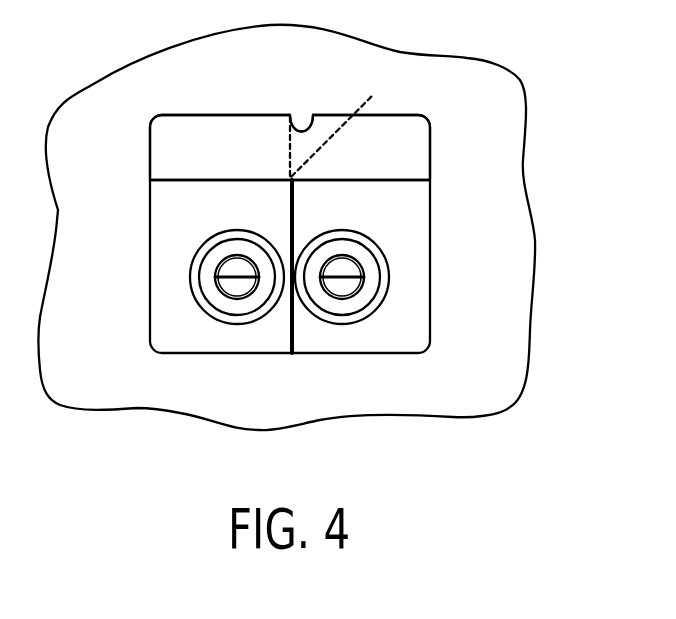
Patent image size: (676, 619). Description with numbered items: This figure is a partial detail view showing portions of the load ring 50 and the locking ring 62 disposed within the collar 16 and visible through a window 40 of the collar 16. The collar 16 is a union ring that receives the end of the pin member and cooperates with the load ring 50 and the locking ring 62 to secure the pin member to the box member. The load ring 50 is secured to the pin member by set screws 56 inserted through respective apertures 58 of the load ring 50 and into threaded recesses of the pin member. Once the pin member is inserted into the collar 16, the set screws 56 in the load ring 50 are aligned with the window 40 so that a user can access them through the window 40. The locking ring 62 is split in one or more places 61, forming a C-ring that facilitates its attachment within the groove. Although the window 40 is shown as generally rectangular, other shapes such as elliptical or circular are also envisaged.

The collar 16 is at (467, 95).
The window 40 is at (309, 128).
The load ring 50 is at (385, 203).
The set screws 56 is at (208, 280).
The apertures 58 is at (343, 325).
The split places 61 is at (333, 123).
The locking ring 62 is at (397, 143).